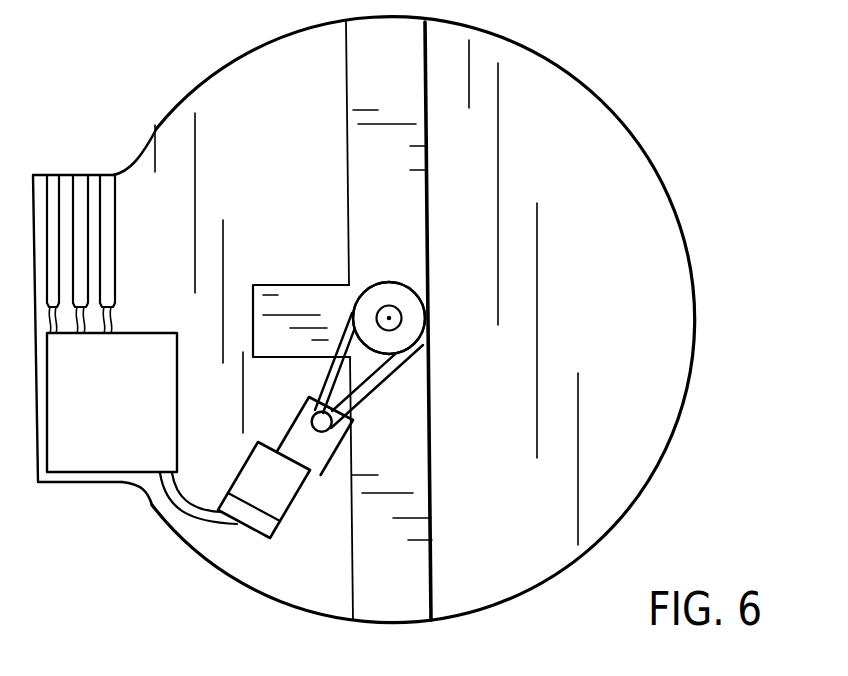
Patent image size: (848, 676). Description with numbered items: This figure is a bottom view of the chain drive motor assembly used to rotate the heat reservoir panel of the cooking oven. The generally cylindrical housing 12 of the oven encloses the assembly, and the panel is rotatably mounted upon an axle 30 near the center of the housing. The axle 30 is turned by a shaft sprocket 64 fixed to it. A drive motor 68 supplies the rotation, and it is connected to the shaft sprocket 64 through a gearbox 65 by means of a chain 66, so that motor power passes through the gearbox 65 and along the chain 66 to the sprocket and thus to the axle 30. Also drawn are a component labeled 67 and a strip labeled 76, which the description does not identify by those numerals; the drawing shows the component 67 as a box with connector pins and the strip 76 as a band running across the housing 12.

The housing 12 is at (677, 210).
The strip 76 is at (358, 147).
The shaft sprocket 64 is at (392, 297).
The axle 30 is at (442, 278).
The chain 66 is at (383, 388).
The gearbox 65 is at (345, 437).
The drive motor 68 is at (253, 490).
The connector box 67 is at (87, 452).